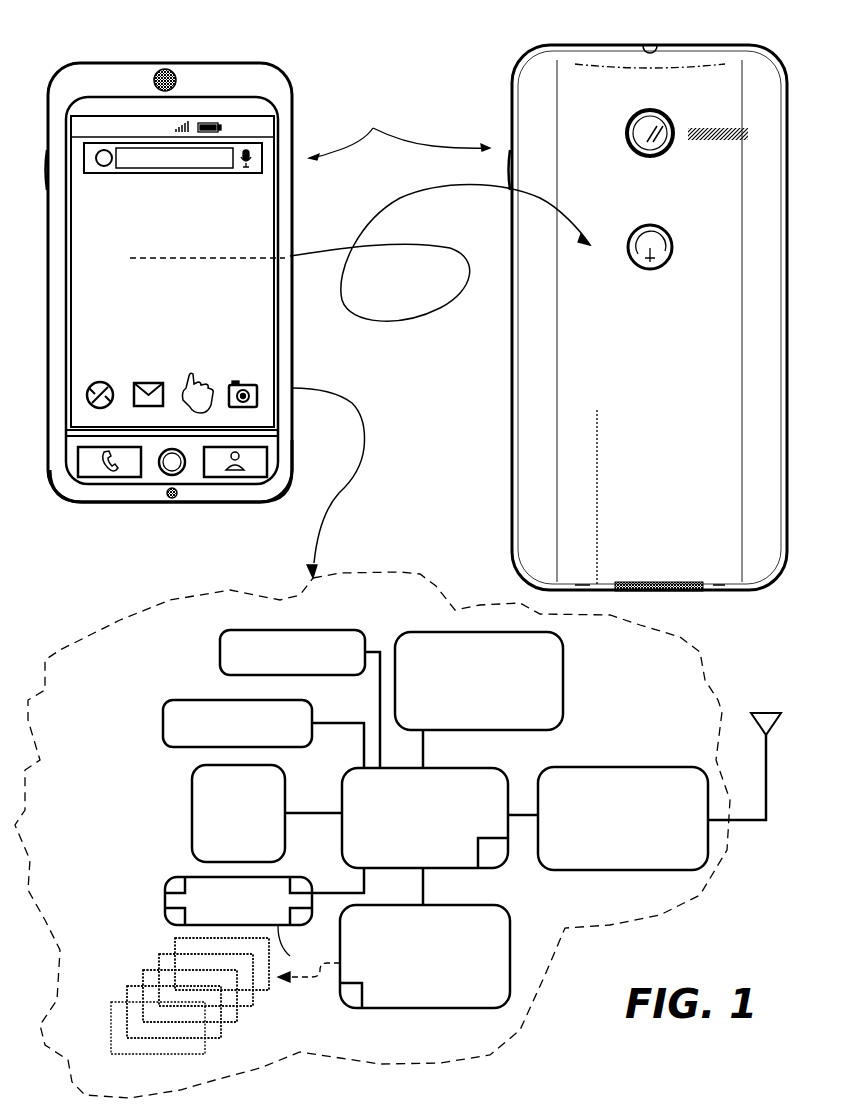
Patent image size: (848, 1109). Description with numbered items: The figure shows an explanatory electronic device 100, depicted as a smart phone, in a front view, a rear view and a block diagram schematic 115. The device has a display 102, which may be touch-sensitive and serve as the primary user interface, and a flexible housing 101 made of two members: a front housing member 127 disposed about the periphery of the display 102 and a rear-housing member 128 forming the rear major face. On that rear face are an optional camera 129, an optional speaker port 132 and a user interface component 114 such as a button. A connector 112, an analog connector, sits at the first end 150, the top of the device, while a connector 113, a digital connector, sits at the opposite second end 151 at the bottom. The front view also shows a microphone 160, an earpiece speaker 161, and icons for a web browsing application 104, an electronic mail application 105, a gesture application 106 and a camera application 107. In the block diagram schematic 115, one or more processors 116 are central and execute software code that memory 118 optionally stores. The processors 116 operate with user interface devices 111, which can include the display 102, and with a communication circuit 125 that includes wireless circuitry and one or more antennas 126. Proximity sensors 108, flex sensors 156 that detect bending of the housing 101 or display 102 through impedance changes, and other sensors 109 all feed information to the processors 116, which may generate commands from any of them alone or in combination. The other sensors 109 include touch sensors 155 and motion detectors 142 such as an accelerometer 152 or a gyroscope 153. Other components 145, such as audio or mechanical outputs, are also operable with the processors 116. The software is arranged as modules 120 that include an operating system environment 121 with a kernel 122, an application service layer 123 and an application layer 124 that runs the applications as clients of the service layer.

The electronic device 100 is at (399, 134).
The housing 101 is at (285, 330).
The display 102 is at (92, 259).
The web browsing application 104 is at (103, 382).
The electronic mail application 105 is at (149, 378).
The gesture application 106 is at (195, 378).
The camera application 107 is at (243, 385).
The proximity sensors 108 is at (200, 700).
The other sensors 109 is at (297, 947).
The user interface devices 111 is at (566, 681).
The connector 112 is at (648, 44).
The connector 113 is at (683, 590).
The user interface component 114 is at (650, 264).
The block diagram schematic 115 is at (722, 688).
The processors 116 is at (470, 766).
The memory 118 is at (512, 949).
The modules 120 is at (103, 985).
The operating system environment 121 is at (260, 985).
The kernel 122 is at (245, 1002).
The application service layer 123 is at (228, 1018).
The application layer 124 is at (214, 1034).
The communication circuit 125 is at (635, 768).
The antennas 126 is at (772, 713).
The front housing member 127 is at (63, 487).
The rear-housing member 128 is at (545, 368).
The camera 129 is at (640, 138).
The speaker port 132 is at (725, 142).
The motion detectors 142 is at (298, 884).
The other components 145 is at (192, 818).
The first end 150 is at (105, 62).
The second end 151 is at (213, 507).
The accelerometer 152 is at (172, 880).
The gyroscope 153 is at (173, 912).
The touch sensors 155 is at (296, 914).
The flex sensors 156 is at (318, 630).
The microphone 160 is at (172, 502).
The earpiece speaker 161 is at (175, 73).